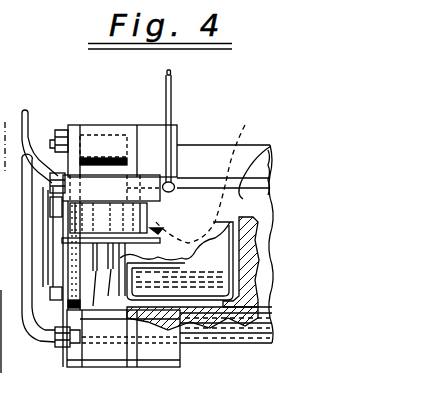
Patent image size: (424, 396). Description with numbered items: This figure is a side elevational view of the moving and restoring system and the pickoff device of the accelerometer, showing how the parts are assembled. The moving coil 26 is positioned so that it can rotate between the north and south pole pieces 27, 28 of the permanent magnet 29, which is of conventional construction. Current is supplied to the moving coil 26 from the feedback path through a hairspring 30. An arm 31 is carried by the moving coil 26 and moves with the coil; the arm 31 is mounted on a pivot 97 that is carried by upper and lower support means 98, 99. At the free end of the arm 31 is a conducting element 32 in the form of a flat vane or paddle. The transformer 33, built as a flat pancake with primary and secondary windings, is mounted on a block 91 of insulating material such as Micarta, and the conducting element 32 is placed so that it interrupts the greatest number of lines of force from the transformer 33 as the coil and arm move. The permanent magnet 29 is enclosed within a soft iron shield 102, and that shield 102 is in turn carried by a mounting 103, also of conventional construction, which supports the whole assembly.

The moving coil 26 is at (139, 277).
The north pole piece 27 is at (158, 265).
The south pole piece 28 is at (240, 125).
The permanent magnet 29 is at (225, 291).
The hairspring 30 is at (94, 283).
The arm 31 is at (107, 296).
The conducting element 32 is at (162, 241).
The transformer 33 is at (162, 229).
The block 91 is at (117, 198).
The pivot 97 is at (85, 248).
The upper support means 98 is at (85, 120).
The lower support means 99 is at (256, 249).
The soft iron shield 102 is at (271, 150).
The mounting 103 is at (270, 163).